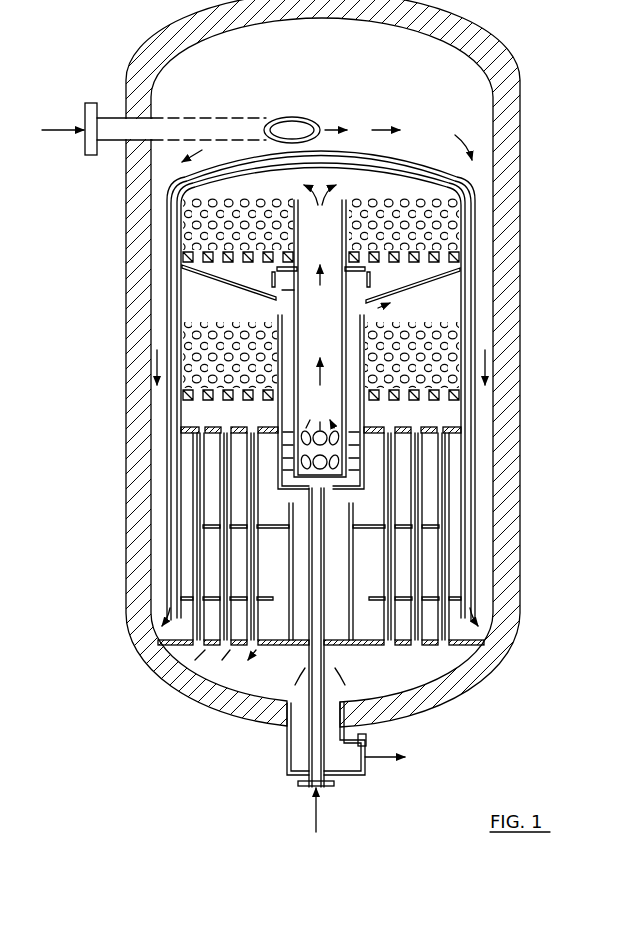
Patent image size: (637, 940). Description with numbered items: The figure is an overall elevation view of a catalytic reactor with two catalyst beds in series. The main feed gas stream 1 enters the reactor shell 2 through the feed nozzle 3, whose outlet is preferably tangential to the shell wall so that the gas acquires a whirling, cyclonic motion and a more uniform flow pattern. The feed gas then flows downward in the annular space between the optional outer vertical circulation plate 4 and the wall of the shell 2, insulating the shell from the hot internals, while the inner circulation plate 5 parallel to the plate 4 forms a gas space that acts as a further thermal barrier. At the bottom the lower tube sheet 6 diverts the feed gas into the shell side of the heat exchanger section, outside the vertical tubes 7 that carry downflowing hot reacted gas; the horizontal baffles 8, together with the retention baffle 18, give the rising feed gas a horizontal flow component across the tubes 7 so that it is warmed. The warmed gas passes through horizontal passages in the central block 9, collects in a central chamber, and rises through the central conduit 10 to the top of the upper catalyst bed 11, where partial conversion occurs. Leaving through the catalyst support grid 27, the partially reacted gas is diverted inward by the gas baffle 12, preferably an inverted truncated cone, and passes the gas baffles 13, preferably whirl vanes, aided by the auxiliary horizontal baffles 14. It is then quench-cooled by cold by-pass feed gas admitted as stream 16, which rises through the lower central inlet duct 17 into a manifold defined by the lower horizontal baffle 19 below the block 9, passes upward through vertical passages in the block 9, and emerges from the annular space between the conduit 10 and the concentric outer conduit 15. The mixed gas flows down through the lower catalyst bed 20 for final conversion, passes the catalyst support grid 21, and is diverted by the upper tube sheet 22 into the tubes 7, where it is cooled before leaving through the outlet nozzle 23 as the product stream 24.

The main feed gas stream 1 is at (58, 130).
The reactor shell 2 is at (127, 186).
The feed nozzle 3 is at (92, 155).
The outer vertical circulation plate 4 is at (184, 173).
The inner circulation plate 5 is at (222, 171).
The lower tube sheet 6 is at (212, 646).
The vertical tubes 7 is at (206, 440).
The horizontal baffles 8 is at (264, 598).
The central block 9 is at (282, 445).
The central conduit 10 is at (299, 216).
The upper catalyst bed 11 is at (397, 206).
The gas baffle 12 is at (222, 279).
The gas baffles 13 is at (372, 280).
The auxiliary horizontal baffles 14 is at (298, 290).
The concentric outer conduit 15 is at (260, 380).
The cold by-pass feed gas stream 16 is at (310, 794).
The lower central inlet duct 17 is at (316, 558).
The retention baffle 18 is at (290, 538).
The lower horizontal baffle 19 is at (332, 498).
The lower catalyst bed 20 is at (388, 303).
The catalyst support grid 21 is at (208, 398).
The upper tube sheet 22 is at (216, 400).
The outlet nozzle 23 is at (362, 776).
The converted gas stream 24 is at (386, 757).
The catalyst support grid 27 is at (352, 264).